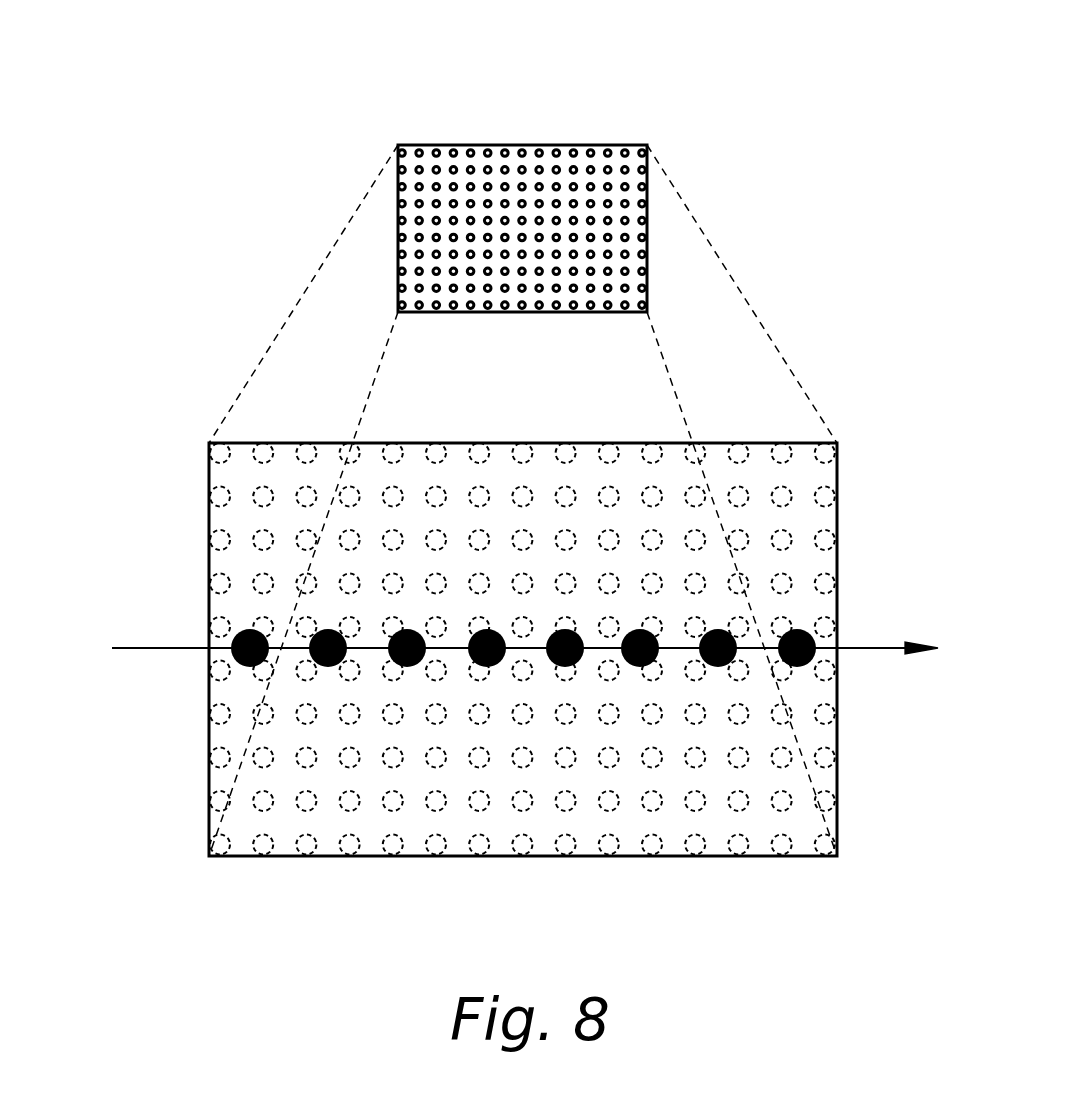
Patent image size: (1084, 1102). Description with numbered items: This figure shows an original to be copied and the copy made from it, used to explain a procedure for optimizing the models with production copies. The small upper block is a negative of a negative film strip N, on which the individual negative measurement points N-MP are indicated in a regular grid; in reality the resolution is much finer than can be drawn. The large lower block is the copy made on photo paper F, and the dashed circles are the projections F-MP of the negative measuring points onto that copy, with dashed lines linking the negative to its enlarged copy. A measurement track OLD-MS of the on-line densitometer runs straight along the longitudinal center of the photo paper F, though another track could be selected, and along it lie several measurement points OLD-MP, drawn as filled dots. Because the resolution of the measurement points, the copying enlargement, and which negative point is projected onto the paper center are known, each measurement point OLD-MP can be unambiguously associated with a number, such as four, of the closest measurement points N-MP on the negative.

The negative of a negative film strip N is at (538, 160).
The negative measurement points N-MP is at (608, 145).
The photo paper F is at (526, 651).
The projections of the negative measuring points F-MP is at (740, 448).
The measurement track of the on-line densitometer OLD-MS is at (863, 648).
The measurement points along the measurement track OLD-MP is at (805, 667).